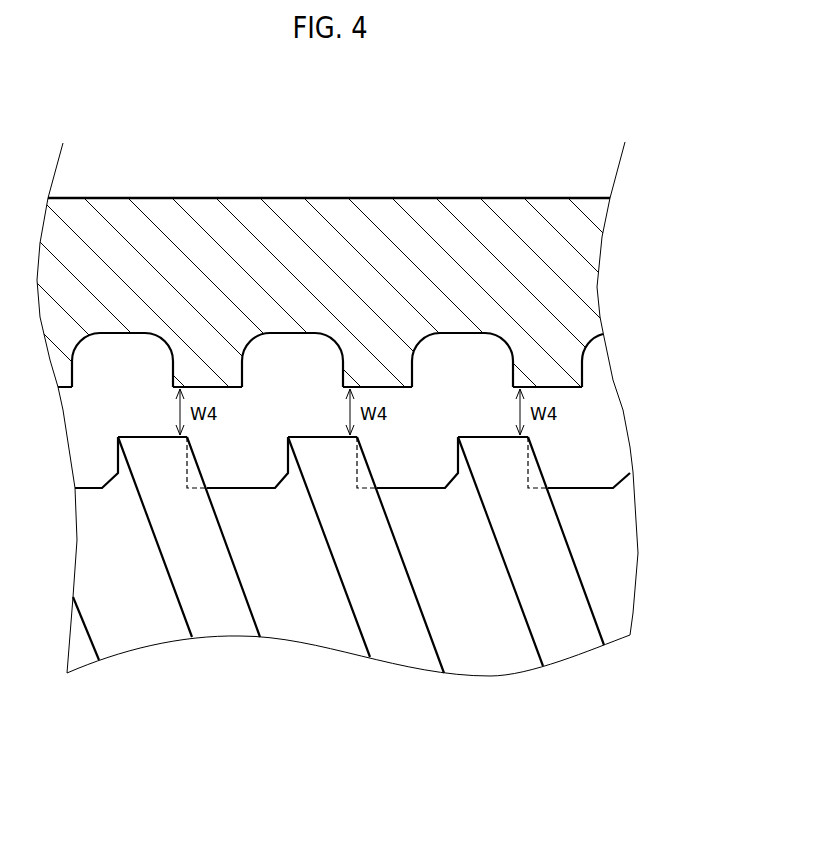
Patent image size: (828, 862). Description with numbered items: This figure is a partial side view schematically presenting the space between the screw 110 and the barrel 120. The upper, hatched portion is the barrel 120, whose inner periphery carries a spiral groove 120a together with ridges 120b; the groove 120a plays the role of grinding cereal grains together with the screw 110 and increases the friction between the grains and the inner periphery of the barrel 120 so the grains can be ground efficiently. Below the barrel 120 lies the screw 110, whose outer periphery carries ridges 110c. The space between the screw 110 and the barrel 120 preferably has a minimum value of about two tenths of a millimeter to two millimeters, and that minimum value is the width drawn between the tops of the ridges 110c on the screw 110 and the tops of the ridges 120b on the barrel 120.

The screw 110 is at (497, 653).
The ridges 110c is at (152, 437).
The barrel 120 is at (535, 230).
The spiral groove 120a is at (463, 335).
The ridges 120b is at (378, 387).